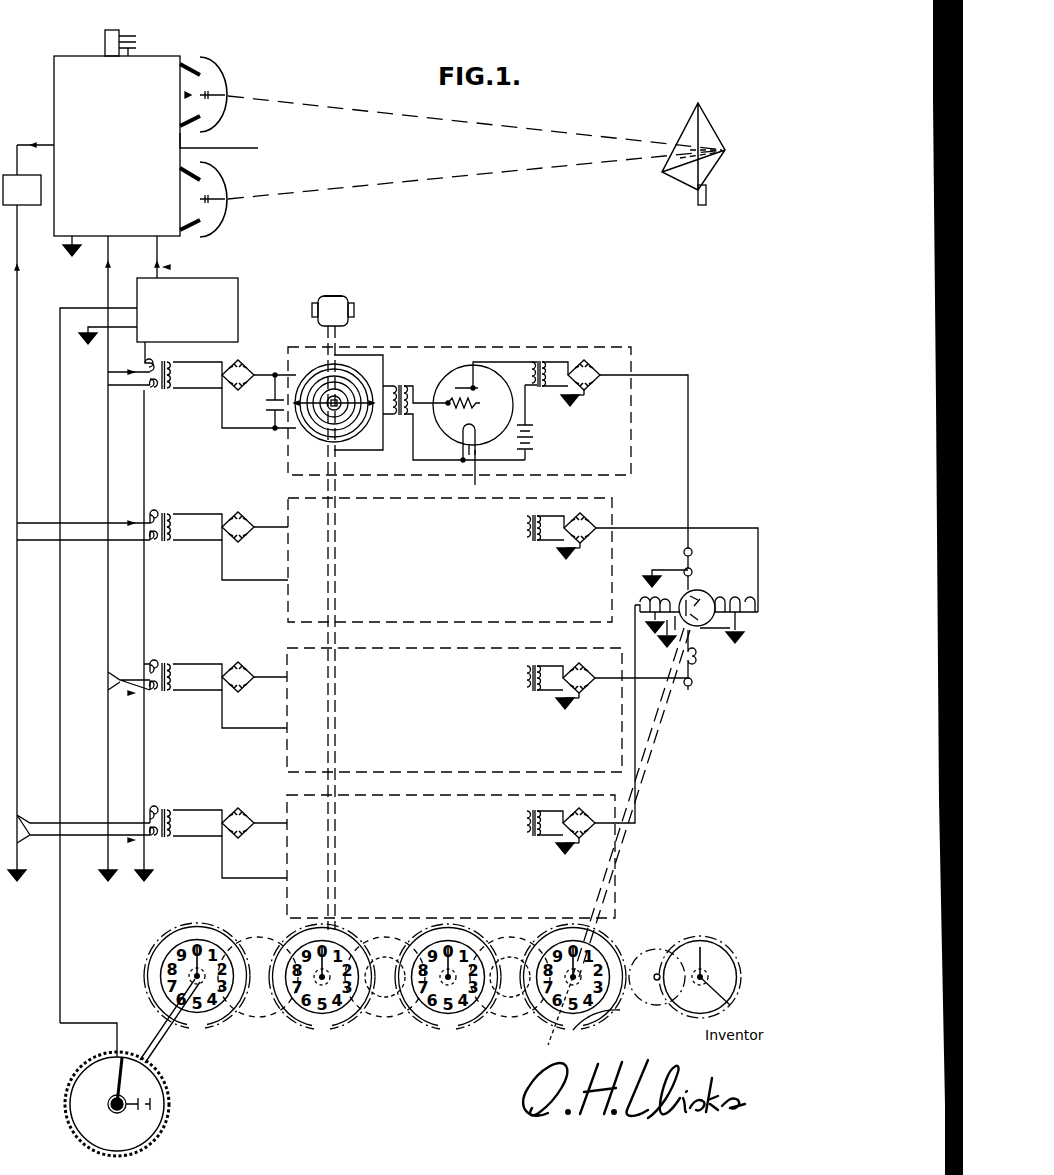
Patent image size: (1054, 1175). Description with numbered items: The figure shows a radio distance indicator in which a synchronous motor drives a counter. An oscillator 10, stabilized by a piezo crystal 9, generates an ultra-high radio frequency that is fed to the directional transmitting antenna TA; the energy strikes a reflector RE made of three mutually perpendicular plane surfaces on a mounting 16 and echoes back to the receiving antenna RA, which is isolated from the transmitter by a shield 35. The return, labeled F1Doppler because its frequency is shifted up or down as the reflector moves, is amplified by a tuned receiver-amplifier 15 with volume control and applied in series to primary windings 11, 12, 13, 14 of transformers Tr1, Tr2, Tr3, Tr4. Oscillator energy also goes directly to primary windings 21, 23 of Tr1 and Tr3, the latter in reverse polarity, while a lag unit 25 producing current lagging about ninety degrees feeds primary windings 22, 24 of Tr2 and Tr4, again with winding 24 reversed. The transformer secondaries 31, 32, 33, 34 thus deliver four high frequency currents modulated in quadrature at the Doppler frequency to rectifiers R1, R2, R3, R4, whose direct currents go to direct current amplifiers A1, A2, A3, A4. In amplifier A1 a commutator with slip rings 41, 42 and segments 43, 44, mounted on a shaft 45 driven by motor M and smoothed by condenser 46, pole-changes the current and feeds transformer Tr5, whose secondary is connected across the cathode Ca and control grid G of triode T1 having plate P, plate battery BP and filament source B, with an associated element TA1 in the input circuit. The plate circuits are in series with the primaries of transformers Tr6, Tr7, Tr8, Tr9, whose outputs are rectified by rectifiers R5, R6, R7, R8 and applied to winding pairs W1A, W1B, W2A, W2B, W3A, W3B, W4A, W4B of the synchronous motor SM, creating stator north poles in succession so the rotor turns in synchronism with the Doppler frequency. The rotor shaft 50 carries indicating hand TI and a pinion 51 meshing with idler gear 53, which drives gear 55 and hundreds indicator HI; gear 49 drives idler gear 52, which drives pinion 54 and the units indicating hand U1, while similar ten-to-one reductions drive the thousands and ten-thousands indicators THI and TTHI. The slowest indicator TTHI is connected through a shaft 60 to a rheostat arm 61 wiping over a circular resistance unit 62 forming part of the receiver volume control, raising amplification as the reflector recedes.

The piezo crystal 9 is at (134, 33).
The oscillator 10 is at (156, 58).
The directional transmitting antenna TA is at (205, 64).
The receiving antenna RA is at (205, 176).
The shield 35 is at (243, 145).
The reflector RE is at (706, 108).
The reflector support 16 is at (698, 203).
The lag unit 25 is at (30, 205).
The tuned receiver-amplifier 15 is at (238, 322).
The primary winding 11 is at (148, 364).
The primary winding 21 is at (152, 385).
The secondary winding of Tr1 31 is at (197, 375).
The transformer Tr1 is at (136, 611).
The rectifier R1 is at (246, 370).
The condenser 46 is at (272, 412).
The motor M is at (333, 311).
The shaft 45 is at (335, 912).
The slip ring 41 is at (322, 382).
The slip ring 42 is at (350, 380).
The commutator segment 43 is at (325, 425).
The commutator segment 44 is at (350, 423).
The D. C. amplifier A1 is at (459, 401).
The coil TA1 is at (394, 411).
The transformer Tr5 is at (403, 388).
The amplifier tube T1 is at (455, 380).
The plate P is at (478, 388).
The control grid G is at (480, 405).
The cathode Ca is at (463, 425).
The filament source B is at (475, 475).
The plate source battery BP is at (520, 448).
The transformer Tr6 is at (546, 383).
The rectifier R5 is at (594, 370).
The primary winding 12 is at (152, 513).
The primary winding 22 is at (152, 538).
The secondary winding 32 is at (197, 527).
The transformer Tr2 is at (95, 538).
The rectifier R2 is at (244, 518).
The D. C. amplifier A2 is at (450, 560).
The transformer Tr7 is at (541, 538).
The rectifier R6 is at (584, 520).
The primary winding 13 is at (152, 663).
The primary winding 23 is at (152, 688).
The secondary winding 33 is at (197, 677).
The transformer Tr3 is at (140, 688).
The rectifier R3 is at (244, 668).
The D. C. amplifier A3 is at (454, 710).
The transformer Tr8 is at (541, 688).
The rectifier R7 is at (583, 670).
The primary winding 14 is at (152, 809).
The primary winding 24 is at (152, 836).
The secondary winding 34 is at (197, 823).
The transformer Tr4 is at (95, 835).
The rectifier R4 is at (243, 813).
The D. C. amplifier A4 is at (451, 856).
The transformer Tr9 is at (541, 832).
The rectifier R8 is at (583, 815).
The synchronous motor SM is at (714, 654).
The stator winding W1A is at (693, 555).
The stator winding W3B is at (693, 574).
The stator winding W2B is at (648, 602).
The stator winding W4A is at (640, 608).
The stator winding W4B is at (725, 602).
The stator winding W2A is at (746, 618).
The stator winding W1B is at (694, 656).
The stator winding W3A is at (692, 683).
The shaft 50 is at (620, 880).
The ten thousand digit indicator TTHI is at (198, 940).
The thousand digit indicator THI is at (345, 955).
The hundreds indicator HI is at (475, 955).
The indicating hand TI is at (600, 955).
The indicating hand U1 is at (715, 955).
The gear 55 is at (505, 1000).
The gear 53 is at (518, 955).
The idler gear 52 is at (658, 950).
The gear 49 is at (618, 1022).
The pinion 51 is at (556, 1015).
The pinion 54 is at (726, 996).
The shaft 60 is at (156, 1040).
The rheostat arm 61 is at (118, 1085).
The resistance unit 62 is at (165, 1108).
The Doppler-shifted received frequency F1Doppler is at (345, 185).